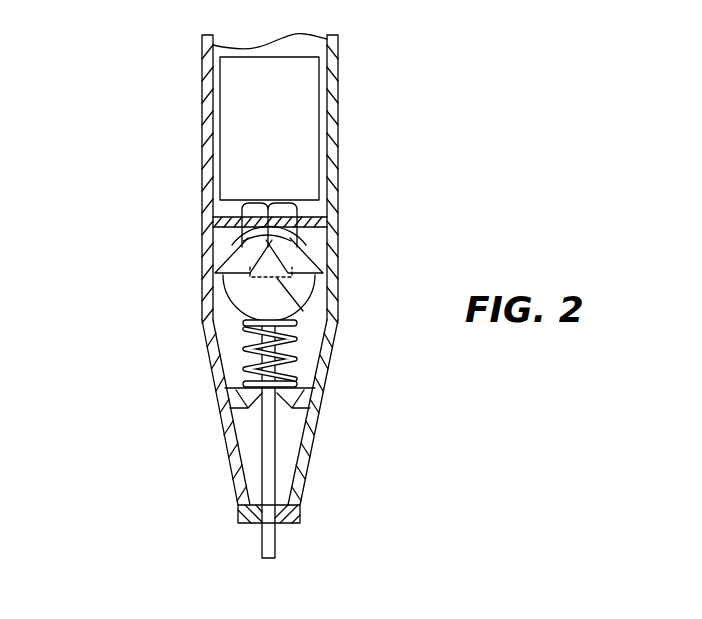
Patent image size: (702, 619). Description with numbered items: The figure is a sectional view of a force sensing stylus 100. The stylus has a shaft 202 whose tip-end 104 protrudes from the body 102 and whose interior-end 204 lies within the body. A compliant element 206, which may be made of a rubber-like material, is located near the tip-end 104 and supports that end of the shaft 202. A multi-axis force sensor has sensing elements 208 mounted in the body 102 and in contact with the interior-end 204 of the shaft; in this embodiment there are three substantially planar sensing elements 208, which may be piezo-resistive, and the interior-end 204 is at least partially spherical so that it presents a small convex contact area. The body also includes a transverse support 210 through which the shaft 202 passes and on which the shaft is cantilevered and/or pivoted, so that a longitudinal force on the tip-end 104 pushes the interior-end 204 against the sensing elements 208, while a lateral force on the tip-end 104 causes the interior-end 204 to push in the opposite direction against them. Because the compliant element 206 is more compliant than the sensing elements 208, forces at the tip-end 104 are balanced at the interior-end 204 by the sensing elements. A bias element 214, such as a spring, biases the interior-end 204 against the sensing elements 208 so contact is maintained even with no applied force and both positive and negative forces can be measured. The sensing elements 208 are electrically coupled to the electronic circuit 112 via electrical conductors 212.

The stylus 100 is at (110, 402).
The body 102 is at (202, 137).
The tip-end 104 is at (276, 543).
The electronic circuit 112 is at (321, 153).
The shaft 202 is at (262, 445).
The interior-end 204 is at (238, 305).
The compliant element 206 is at (288, 508).
The sensing elements 208 is at (232, 265).
The transverse support 210 is at (305, 398).
The electrical conductors 212 is at (240, 210).
The bias element 214 is at (295, 360).